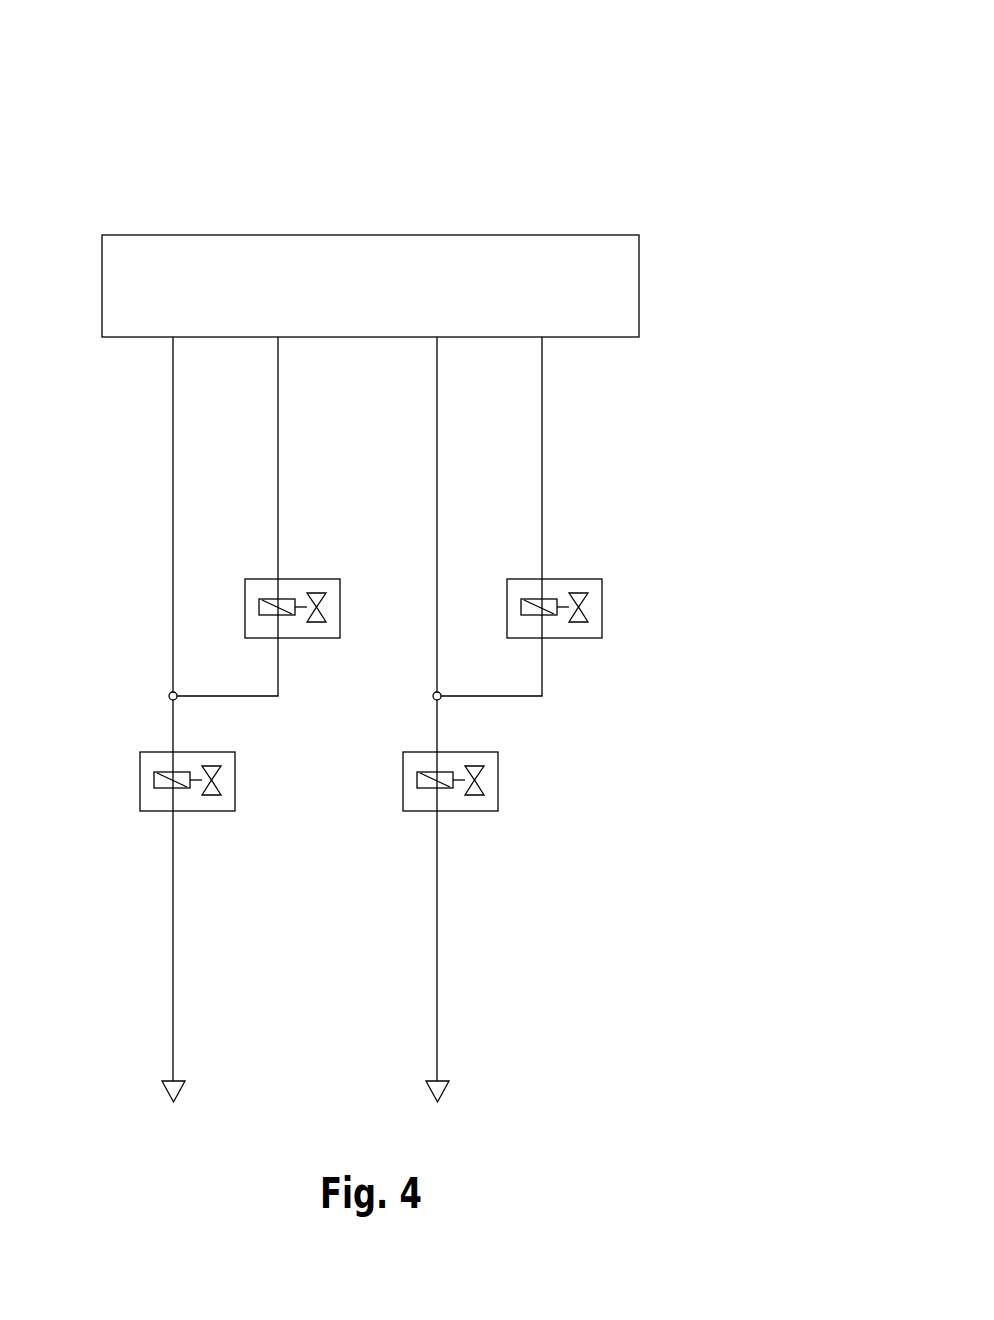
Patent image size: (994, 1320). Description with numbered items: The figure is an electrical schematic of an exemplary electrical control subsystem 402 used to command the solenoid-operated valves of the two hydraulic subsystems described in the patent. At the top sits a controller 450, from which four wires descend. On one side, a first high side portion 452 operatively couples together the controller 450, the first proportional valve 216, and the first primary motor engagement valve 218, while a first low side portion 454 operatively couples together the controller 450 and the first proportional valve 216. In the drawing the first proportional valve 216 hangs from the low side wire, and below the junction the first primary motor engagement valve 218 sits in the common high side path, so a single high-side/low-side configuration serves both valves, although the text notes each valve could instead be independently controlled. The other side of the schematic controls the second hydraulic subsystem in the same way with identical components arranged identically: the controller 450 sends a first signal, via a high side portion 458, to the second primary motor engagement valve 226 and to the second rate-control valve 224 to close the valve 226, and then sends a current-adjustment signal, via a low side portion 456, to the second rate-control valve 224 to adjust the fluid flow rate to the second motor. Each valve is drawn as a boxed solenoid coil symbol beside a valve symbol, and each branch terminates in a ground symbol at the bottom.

The electrical control subsystem 402 is at (552, 128).
The controller 450 is at (250, 235).
The high side portion 458 is at (173, 527).
The low side portion 456 is at (278, 486).
The first low side portion 454 is at (542, 412).
The first high side portion 452 is at (437, 505).
The second rate-control valve 224 is at (318, 638).
The first proportional valve 216 is at (583, 638).
The second primary motor engagement valve 226 is at (217, 810).
The first primary motor engagement valve 218 is at (478, 811).